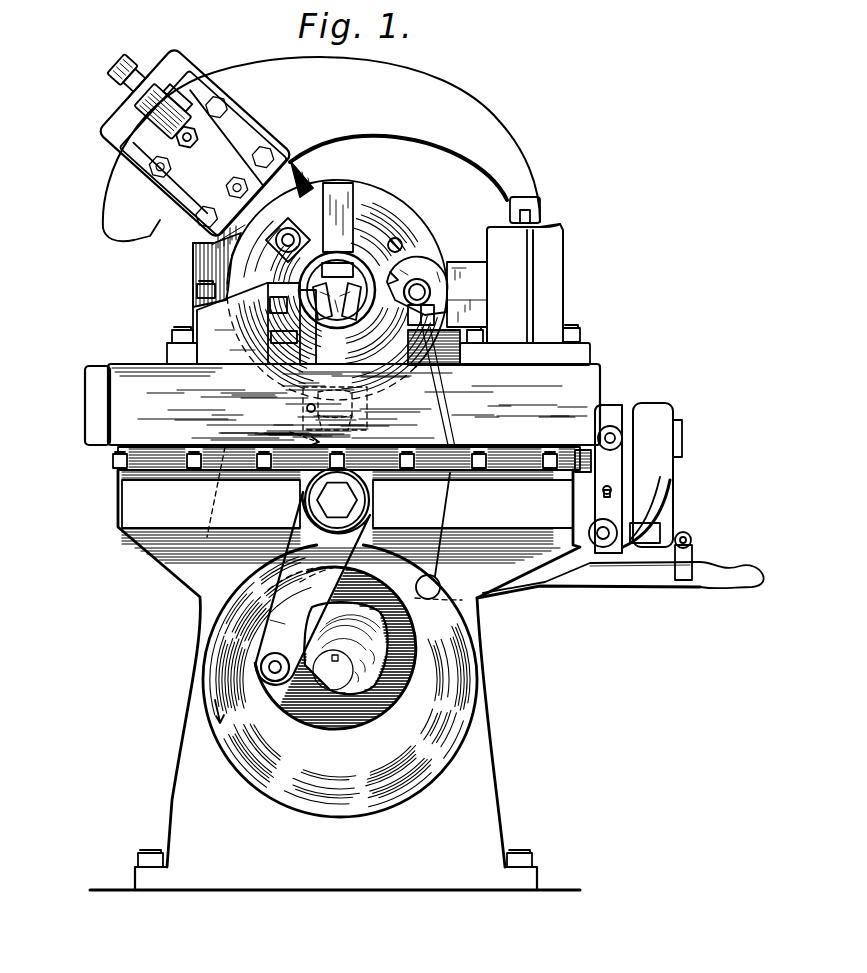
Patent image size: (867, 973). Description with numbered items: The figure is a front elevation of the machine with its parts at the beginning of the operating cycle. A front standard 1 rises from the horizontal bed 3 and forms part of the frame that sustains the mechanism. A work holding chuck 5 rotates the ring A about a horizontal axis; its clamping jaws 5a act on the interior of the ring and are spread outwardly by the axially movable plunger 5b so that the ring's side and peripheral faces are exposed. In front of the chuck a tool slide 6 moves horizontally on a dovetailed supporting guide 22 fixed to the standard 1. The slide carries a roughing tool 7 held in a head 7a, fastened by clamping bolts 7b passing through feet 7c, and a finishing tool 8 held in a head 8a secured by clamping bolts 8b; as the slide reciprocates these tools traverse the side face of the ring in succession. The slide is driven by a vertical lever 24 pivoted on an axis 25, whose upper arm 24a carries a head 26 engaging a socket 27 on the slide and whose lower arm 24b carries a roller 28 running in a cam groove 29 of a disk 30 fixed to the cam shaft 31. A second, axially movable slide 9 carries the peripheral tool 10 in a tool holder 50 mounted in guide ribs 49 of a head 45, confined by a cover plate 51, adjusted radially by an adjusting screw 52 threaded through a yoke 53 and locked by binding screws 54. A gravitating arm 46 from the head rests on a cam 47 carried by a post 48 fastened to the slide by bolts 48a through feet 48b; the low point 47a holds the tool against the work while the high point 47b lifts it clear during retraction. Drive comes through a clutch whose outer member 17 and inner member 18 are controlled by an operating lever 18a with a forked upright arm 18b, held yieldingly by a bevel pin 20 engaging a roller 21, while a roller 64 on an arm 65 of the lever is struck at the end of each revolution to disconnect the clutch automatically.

The front upright or standard 1 is at (349, 657).
The horizontal base plate or bed 3 is at (335, 870).
The work holding chuck 5 is at (378, 192).
The clamping jaws 5a is at (352, 268).
The plunger 5b is at (340, 287).
The tool slide or carriage 6 is at (342, 404).
The operating tool 7 is at (272, 310).
The head 7a is at (230, 337).
The clamping bolts 7b is at (195, 291).
The feet 7c is at (168, 352).
The operating tool 8 is at (430, 292).
The head 8a is at (467, 294).
The clamping bolts 8b is at (423, 330).
The tool slide or carriage 9 is at (118, 221).
The operating tool 10 is at (270, 252).
The outer clutch member 17 is at (593, 470).
The inner clutch member 18 is at (583, 480).
The operating lever 18a is at (634, 590).
The upright arm 18b is at (648, 520).
The spring actuated bevel pin 20 is at (672, 530).
The roller 21 is at (690, 543).
The supporting guide 22 is at (525, 475).
The lever 24 is at (313, 588).
The upper arm 24a is at (289, 429).
The lower arm 24b is at (280, 622).
The axis 25 is at (316, 500).
The head 26 is at (350, 395).
The socket 27 is at (360, 432).
The roller 28 is at (261, 668).
The cam groove 29 is at (372, 718).
The disk 30 is at (340, 681).
The cam shaft 31 is at (320, 698).
The head 45 is at (160, 218).
The gravitating arm 46 is at (321, 142).
The cam 47 is at (538, 238).
The low point 47a is at (512, 222).
The high point 47b is at (547, 226).
The post 48 is at (555, 300).
The fastening bolts 48a is at (582, 335).
The feet 48b is at (578, 353).
The guide ribs 49 is at (212, 92).
The tool holder 50 is at (305, 180).
The cover plate 51 is at (262, 133).
The adjusting screw 52 is at (140, 122).
The yoke 53 is at (120, 102).
The binding screws 54 is at (212, 200).
The roller 64 is at (439, 598).
The arm 65 is at (620, 580).
The ring A is at (421, 288).